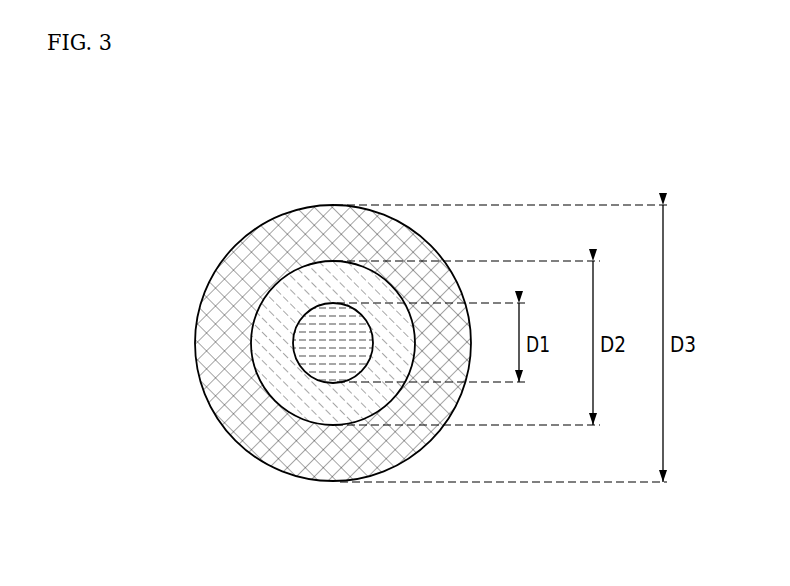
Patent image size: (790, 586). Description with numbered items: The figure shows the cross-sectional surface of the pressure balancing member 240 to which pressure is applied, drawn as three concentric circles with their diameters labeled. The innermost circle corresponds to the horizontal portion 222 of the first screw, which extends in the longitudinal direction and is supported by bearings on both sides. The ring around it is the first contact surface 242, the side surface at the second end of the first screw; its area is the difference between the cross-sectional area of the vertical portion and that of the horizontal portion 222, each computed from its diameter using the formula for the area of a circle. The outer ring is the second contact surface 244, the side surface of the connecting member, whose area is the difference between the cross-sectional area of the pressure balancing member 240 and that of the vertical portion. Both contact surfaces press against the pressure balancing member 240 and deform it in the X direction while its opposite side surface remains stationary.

The second contact surface 244 is at (333, 232).
The first contact surface 242 is at (273, 328).
The horizontal portion 222 is at (317, 353).
The pressure balancing member 240 is at (337, 458).